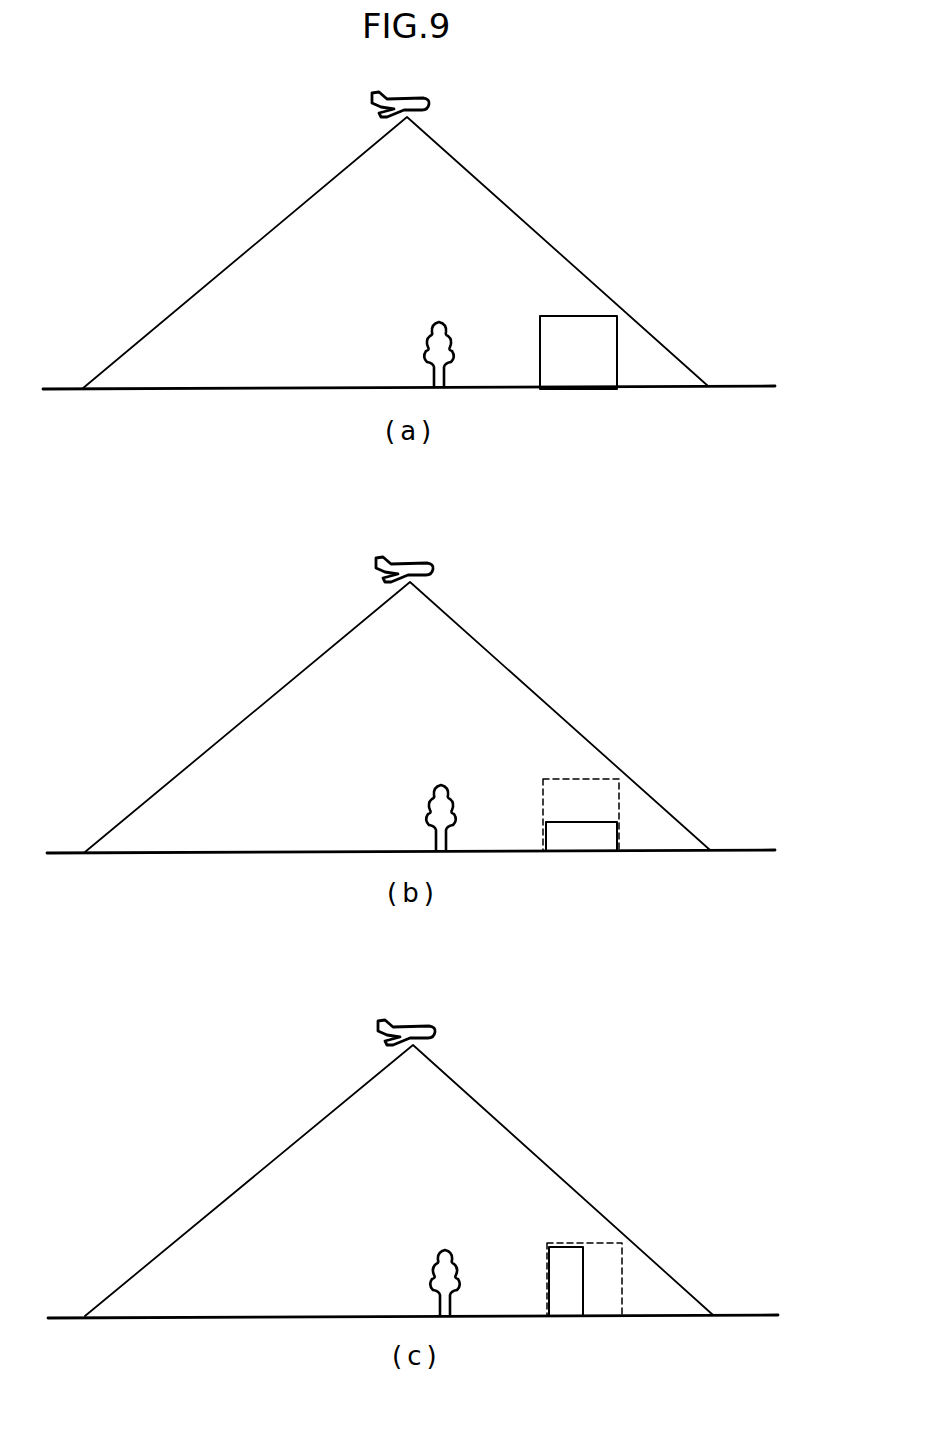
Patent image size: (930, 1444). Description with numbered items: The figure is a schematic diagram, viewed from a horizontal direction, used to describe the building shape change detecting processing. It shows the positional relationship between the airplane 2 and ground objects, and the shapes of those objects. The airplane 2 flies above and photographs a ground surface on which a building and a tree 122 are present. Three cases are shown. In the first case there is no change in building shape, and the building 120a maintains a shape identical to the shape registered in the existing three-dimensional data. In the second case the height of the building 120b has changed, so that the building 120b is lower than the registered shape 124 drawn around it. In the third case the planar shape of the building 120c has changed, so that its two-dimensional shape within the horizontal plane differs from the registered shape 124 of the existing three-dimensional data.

The airplane 2 is at (430, 101).
The tree 122 is at (448, 326).
The building 120a is at (578, 316).
The building 120b is at (619, 836).
The building 120c is at (585, 1281).
The shape registered in the existing three-dimensional data 124 is at (581, 779).